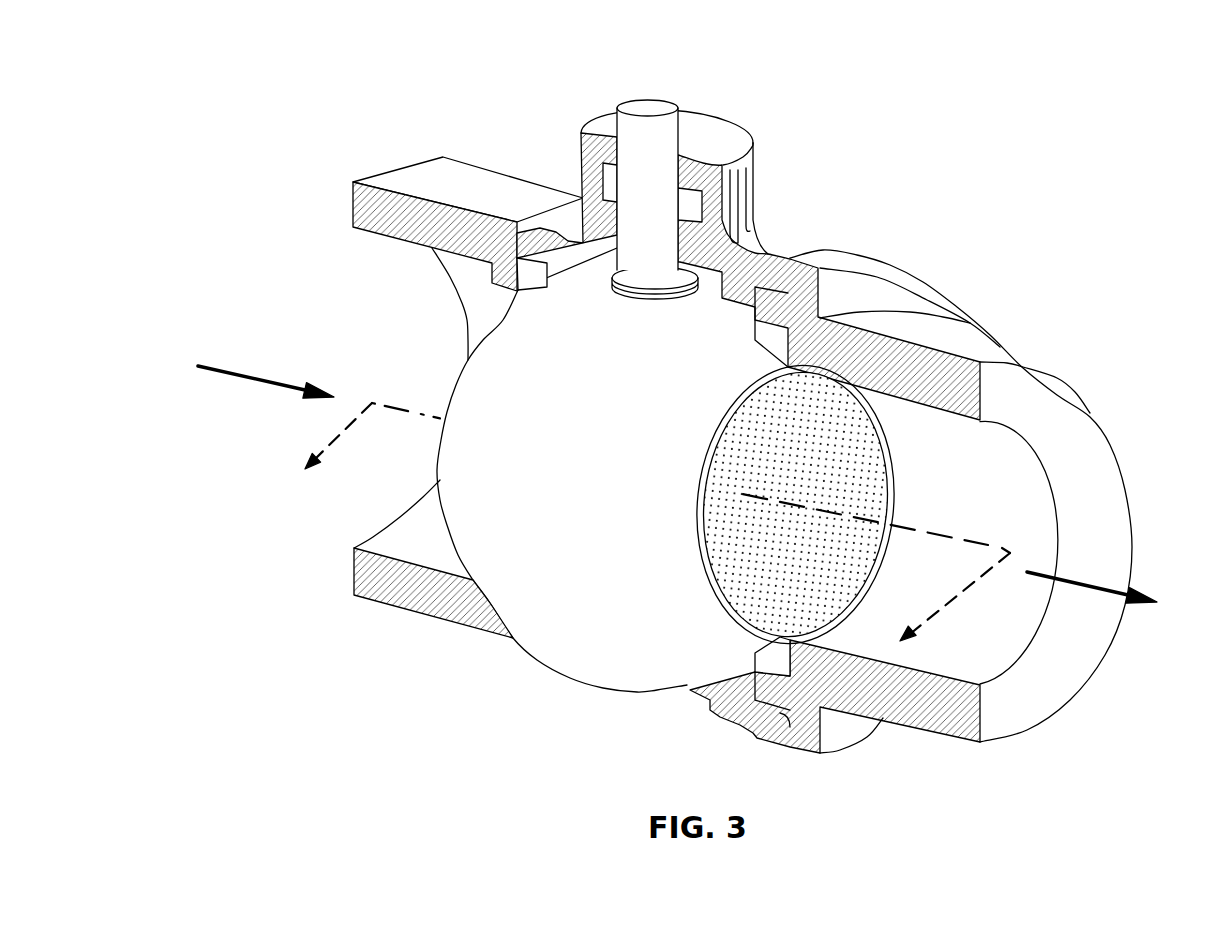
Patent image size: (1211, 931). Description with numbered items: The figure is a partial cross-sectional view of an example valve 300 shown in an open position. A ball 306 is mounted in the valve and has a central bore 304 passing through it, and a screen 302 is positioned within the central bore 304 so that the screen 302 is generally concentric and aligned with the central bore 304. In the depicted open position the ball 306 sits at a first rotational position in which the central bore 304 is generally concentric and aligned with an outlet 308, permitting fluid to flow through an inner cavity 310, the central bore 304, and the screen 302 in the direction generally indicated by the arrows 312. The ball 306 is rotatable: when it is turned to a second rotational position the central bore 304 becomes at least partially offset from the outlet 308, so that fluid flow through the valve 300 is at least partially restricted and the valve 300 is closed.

The valve 300 is at (671, 393).
The screen 302 is at (776, 459).
The central bore 304 is at (703, 492).
The ball 306 is at (455, 385).
The outlet 308 is at (1057, 545).
The inner cavity 310 is at (1030, 478).
The arrows 312 is at (232, 366).